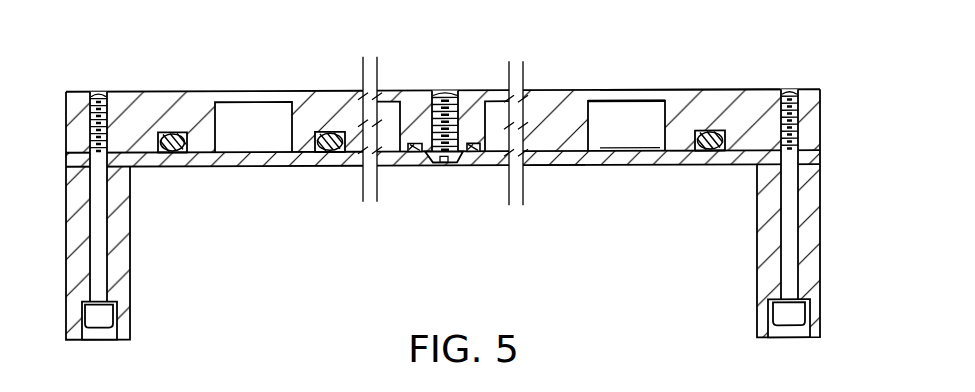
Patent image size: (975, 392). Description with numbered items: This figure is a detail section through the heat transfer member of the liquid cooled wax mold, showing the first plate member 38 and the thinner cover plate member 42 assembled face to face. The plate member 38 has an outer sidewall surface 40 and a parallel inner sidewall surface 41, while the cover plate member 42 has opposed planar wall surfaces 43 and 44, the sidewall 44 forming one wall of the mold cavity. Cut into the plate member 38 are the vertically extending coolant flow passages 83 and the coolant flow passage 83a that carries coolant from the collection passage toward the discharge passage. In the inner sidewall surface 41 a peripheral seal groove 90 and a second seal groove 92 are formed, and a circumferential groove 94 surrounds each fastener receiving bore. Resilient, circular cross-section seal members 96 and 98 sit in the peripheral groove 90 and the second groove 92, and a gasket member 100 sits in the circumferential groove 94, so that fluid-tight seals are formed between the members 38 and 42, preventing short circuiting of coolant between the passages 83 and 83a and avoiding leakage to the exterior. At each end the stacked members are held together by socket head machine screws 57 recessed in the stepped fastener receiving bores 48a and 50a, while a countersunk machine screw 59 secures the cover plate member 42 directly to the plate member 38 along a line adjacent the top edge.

The plate member 38 is at (821, 115).
The outer sidewall surface 40 is at (725, 60).
The inner sidewall surface 41 is at (688, 167).
The cover plate member 42 is at (821, 158).
The planar wall surface 43 is at (628, 148).
The planar wall surface 44 is at (556, 169).
The stepped fastener receiving bore 48a is at (95, 252).
The stepped fastener receiving bore 50a is at (794, 235).
The socket head machine screw 57 is at (101, 330).
The countersunk machine screw 59 is at (440, 168).
The coolant flow passage 83 is at (610, 114).
The coolant flow passage 83a is at (238, 122).
The peripheral seal groove 90 is at (166, 155).
The second seal groove 92 is at (328, 154).
The circumferential groove 94 is at (417, 154).
The seal member 96 is at (172, 133).
The seal member 98 is at (333, 133).
The gasket member 100 is at (475, 154).